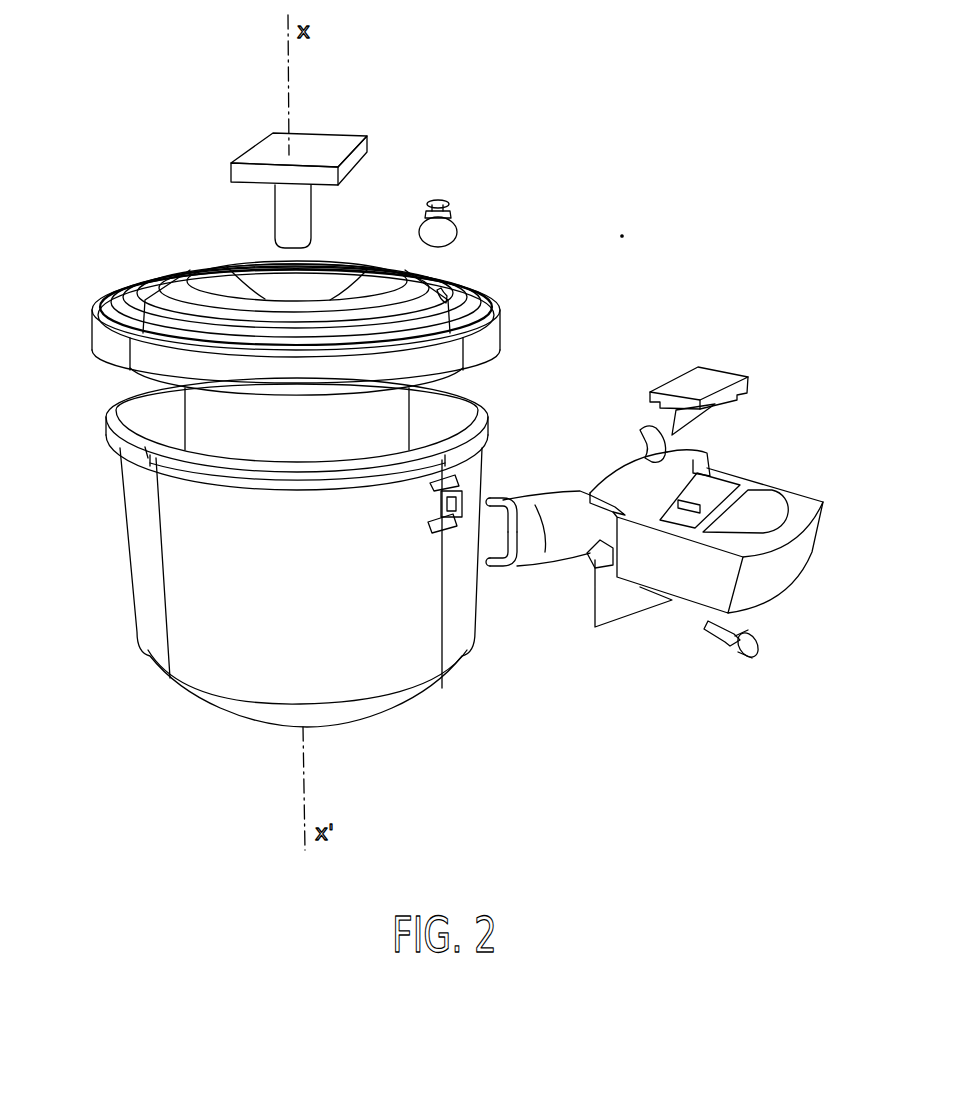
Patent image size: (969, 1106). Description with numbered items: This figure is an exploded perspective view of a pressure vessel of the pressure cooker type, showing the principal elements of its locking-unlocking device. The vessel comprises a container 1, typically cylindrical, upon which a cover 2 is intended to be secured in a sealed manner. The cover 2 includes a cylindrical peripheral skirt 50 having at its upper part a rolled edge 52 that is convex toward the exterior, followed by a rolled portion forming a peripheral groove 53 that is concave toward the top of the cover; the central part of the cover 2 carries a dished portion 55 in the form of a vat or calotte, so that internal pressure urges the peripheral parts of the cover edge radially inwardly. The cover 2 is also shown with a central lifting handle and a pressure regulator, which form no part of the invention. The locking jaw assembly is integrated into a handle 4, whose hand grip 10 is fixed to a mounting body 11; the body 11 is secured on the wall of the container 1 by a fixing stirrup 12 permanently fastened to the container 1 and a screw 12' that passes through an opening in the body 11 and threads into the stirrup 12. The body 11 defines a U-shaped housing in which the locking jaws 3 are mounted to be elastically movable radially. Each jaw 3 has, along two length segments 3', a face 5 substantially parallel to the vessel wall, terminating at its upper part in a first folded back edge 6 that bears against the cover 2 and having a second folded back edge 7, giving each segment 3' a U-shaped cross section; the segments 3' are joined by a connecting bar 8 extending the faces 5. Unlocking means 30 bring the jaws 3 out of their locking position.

The container 1 is at (281, 552).
The cover 2 is at (297, 264).
The locking jaws 3 is at (546, 476).
The length segments 3' is at (616, 465).
The handles 4 is at (670, 500).
The face 5 is at (553, 540).
The first folded back edge 6 is at (492, 500).
The second folded back edge 7 is at (490, 568).
The connecting bar 8 is at (600, 528).
The hand grip 10 is at (770, 570).
The mounting body 11 is at (680, 468).
The fixing stirrup 12 is at (386, 531).
The screw 12' is at (713, 670).
The unlocking means 30 is at (718, 368).
The cylindrical peripheral skirt 50 is at (103, 339).
The rolled edge 52 is at (500, 313).
The peripheral groove 53 is at (483, 303).
The dished portion 55 is at (330, 283).